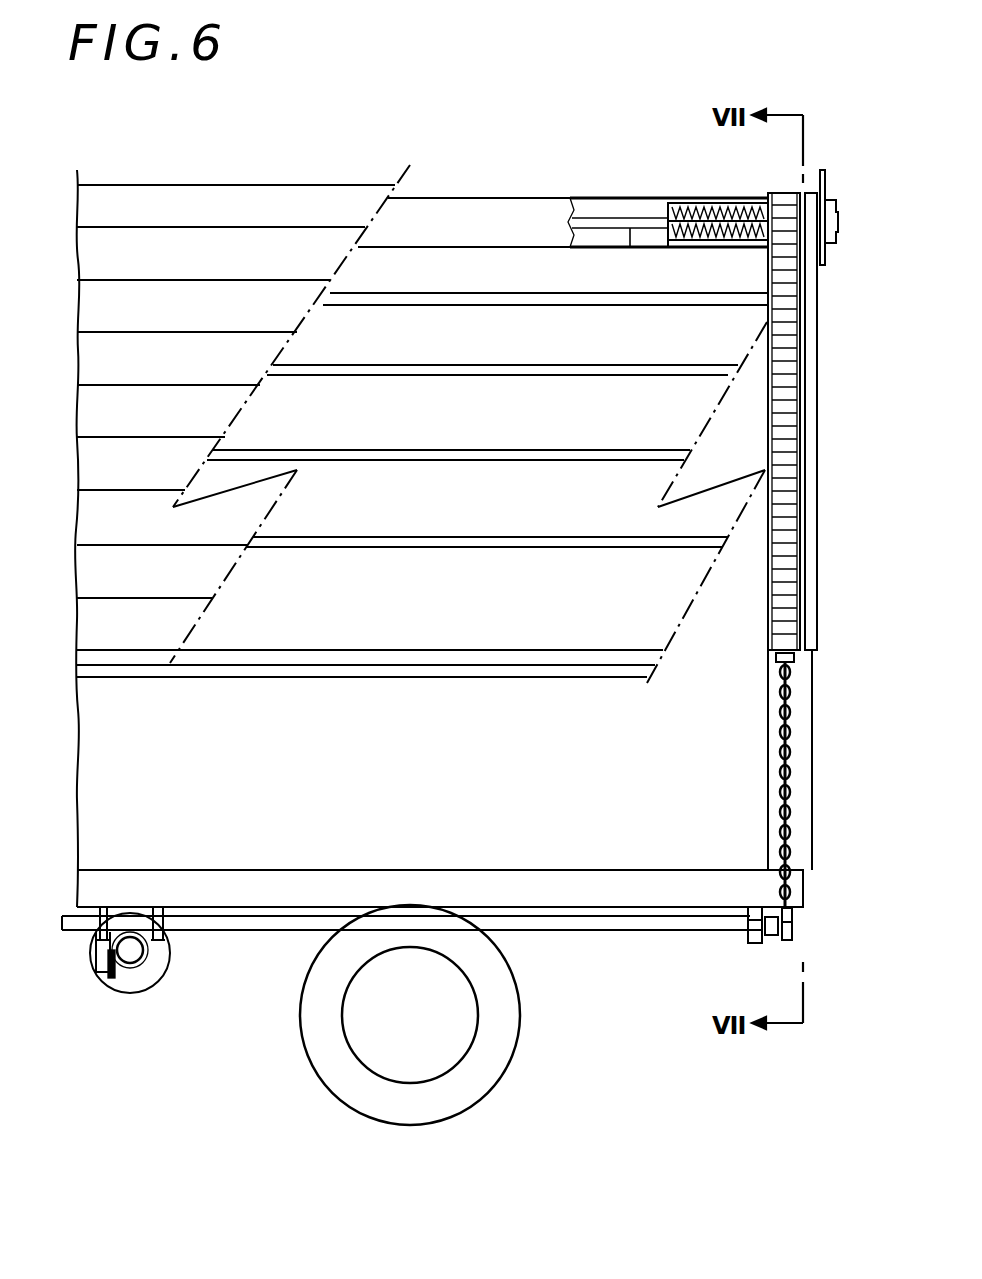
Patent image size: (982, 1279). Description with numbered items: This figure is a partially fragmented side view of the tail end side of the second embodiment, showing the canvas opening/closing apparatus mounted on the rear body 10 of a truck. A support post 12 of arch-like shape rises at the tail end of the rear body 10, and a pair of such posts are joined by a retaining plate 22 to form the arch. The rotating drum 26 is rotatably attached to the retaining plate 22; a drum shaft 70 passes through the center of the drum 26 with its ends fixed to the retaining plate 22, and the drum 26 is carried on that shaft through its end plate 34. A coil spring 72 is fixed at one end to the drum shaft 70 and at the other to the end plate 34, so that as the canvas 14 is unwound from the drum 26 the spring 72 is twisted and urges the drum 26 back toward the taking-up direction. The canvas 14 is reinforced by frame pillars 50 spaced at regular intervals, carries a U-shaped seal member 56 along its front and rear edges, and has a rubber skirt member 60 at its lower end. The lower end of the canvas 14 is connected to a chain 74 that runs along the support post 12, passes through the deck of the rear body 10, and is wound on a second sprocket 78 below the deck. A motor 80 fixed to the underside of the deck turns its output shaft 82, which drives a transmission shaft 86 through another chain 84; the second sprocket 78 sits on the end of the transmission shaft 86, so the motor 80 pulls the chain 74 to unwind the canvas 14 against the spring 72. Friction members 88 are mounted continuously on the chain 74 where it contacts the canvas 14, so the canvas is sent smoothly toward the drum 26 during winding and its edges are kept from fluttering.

The rear body 10 is at (302, 868).
The support post 12 is at (768, 748).
The canvas 14 is at (246, 516).
The retaining plate 22 is at (823, 265).
The rotating drum 26 is at (440, 205).
The end plate 34 is at (684, 203).
The frame pillar 50 is at (528, 370).
The seal member 56 is at (813, 562).
The skirt member 60 is at (440, 680).
The drum shaft 70 is at (633, 234).
The coil spring 72 is at (711, 203).
The chain 74 is at (790, 735).
The second sprocket 78 is at (772, 943).
The motor 80 is at (157, 968).
The output shaft 82 is at (100, 962).
The chain 84 is at (100, 945).
The transmission shaft 86 is at (272, 935).
The friction member 88 is at (790, 437).